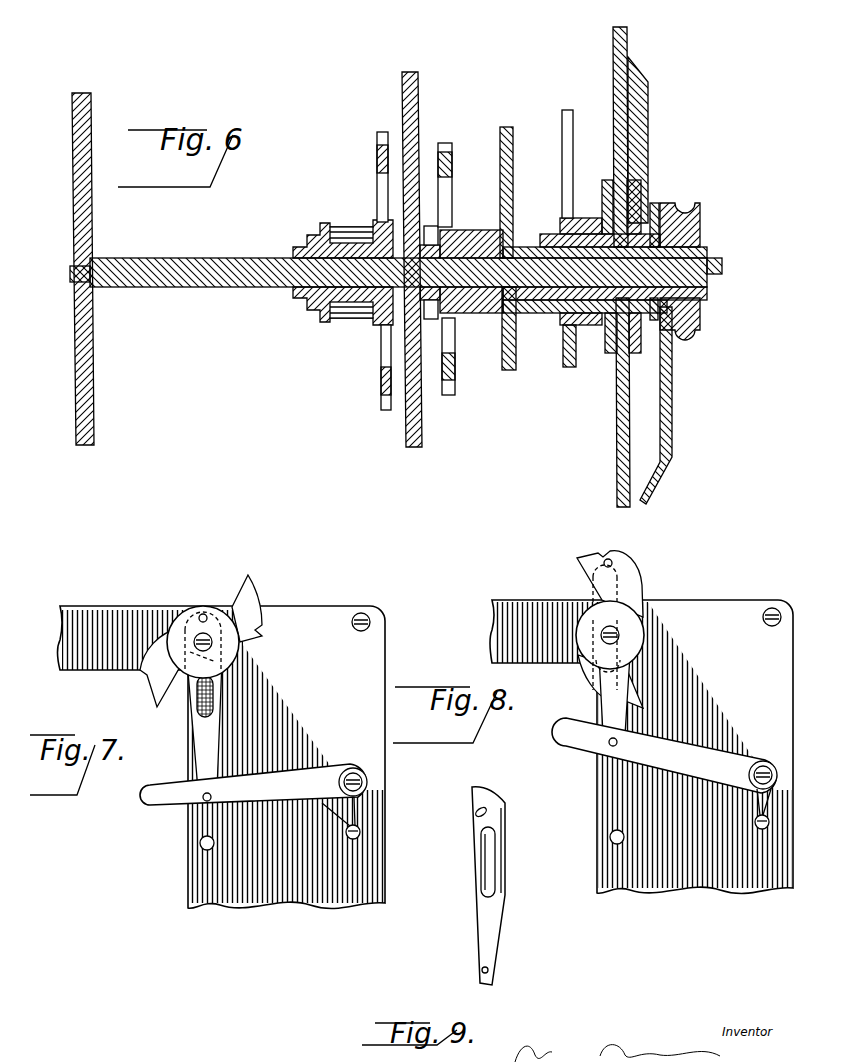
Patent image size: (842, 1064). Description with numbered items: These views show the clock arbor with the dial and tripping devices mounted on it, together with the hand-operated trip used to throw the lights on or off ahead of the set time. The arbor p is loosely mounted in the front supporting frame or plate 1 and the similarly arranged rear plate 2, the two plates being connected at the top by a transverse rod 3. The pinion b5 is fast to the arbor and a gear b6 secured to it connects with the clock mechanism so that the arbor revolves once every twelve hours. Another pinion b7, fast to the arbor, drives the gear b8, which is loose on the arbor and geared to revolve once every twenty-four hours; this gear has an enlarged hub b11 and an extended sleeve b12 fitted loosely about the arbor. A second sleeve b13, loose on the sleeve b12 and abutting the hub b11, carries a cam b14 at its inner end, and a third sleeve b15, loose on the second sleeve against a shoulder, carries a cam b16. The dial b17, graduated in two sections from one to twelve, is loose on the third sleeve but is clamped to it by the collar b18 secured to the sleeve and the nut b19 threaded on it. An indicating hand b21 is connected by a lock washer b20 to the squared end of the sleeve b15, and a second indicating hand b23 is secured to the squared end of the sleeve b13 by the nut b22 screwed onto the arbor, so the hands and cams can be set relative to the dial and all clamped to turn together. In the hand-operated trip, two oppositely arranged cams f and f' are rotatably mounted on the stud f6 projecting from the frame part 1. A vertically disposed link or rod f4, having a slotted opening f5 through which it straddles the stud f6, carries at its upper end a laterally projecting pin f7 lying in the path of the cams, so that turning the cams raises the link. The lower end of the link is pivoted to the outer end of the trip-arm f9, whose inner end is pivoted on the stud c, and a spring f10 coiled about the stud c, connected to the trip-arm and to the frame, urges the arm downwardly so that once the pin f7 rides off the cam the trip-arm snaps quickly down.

In FIG. 6, the shaft p is at (202, 258).
In FIG. 6, the front supporting frame or plate 1 is at (402, 439).
In FIG. 7, the front supporting frame or plate 1 is at (367, 667).
In FIG. 8, the front supporting frame or plate 1 is at (723, 603).
In FIG. 6, the rear plate 2 is at (92, 428).
In FIG. 7, the transverse rod 3 is at (373, 623).
In FIG. 8, the transverse rod 3 is at (777, 606).
In FIG. 6, the pinion b5 is at (337, 228).
In FIG. 6, the gear b6 is at (377, 163).
In FIG. 6, the pinion b7 is at (428, 240).
In FIG. 6, the gear b8 is at (452, 153).
In FIG. 6, the enlarged hub b11 is at (460, 240).
In FIG. 6, the extended sleeve b12 is at (526, 250).
In FIG. 6, the second sleeve b13 is at (543, 308).
In FIG. 6, the cam b14 is at (512, 132).
In FIG. 6, the third sleeve b15 is at (582, 222).
In FIG. 6, the cam b16 is at (565, 137).
In FIG. 6, the dial b17 is at (620, 43).
In FIG. 6, the collar b18 is at (607, 183).
In FIG. 6, the nut b19 is at (645, 183).
In FIG. 6, the lock washer b20 is at (656, 204).
In FIG. 6, the indicating hand b21 is at (648, 98).
In FIG. 6, the nut b22 is at (700, 223).
In FIG. 6, the second indicating hand b23 is at (672, 368).
In FIG. 7, the cam f is at (147, 668).
In FIG. 8, the cam f is at (617, 584).
In FIG. 7, the cam f' is at (254, 603).
In FIG. 7, the link or rod f4 is at (198, 743).
In FIG. 8, the link or rod f4 is at (613, 712).
In FIG. 9, the link or rod f4 is at (487, 947).
In FIG. 7, the slotted opening f5 is at (197, 707).
In FIG. 9, the slotted opening f5 is at (487, 852).
In FIG. 7, the stud f6 is at (195, 645).
In FIG. 8, the stud f6 is at (610, 636).
In FIG. 7, the laterally projecting pin f7 is at (203, 614).
In FIG. 8, the laterally projecting pin f7 is at (611, 561).
In FIG. 9, the laterally projecting pin f7 is at (476, 812).
In FIG. 7, the trip-arm f9 is at (307, 762).
In FIG. 8, the trip-arm f9 is at (710, 753).
In FIG. 7, the spring f10 is at (345, 806).
In FIG. 8, the spring f10 is at (757, 782).
In FIG. 7, the stud c is at (364, 779).
In FIG. 8, the stud c is at (770, 760).